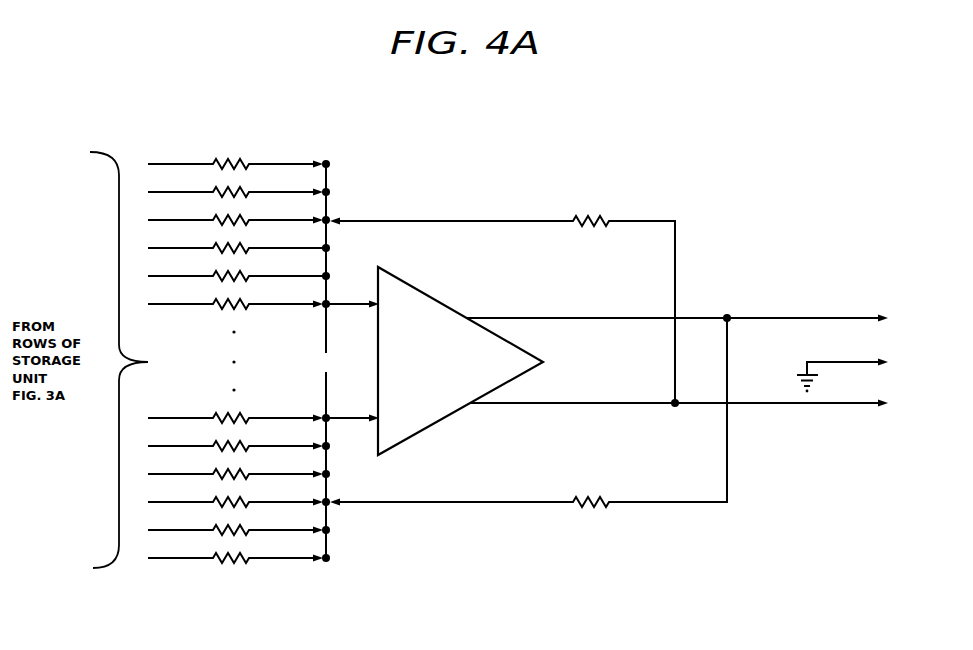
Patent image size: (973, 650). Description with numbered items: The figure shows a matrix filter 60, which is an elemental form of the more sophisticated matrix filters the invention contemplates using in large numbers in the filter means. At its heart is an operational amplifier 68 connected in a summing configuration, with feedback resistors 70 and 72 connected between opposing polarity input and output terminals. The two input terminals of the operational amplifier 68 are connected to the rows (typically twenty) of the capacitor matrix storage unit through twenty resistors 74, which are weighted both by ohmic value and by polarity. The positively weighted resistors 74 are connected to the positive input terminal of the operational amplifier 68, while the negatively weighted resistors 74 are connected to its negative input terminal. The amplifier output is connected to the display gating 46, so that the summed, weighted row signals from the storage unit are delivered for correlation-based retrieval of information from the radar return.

The matrix filter 60 is at (466, 562).
The resistors 74 is at (233, 160).
The operational amplifier 68 is at (391, 274).
The feedback resistor 70 is at (585, 221).
The feedback resistor 72 is at (593, 508).
The display gating 46 is at (871, 361).